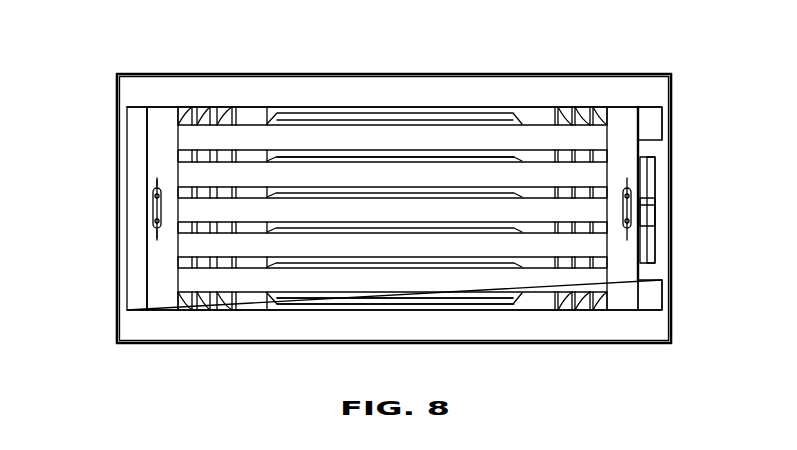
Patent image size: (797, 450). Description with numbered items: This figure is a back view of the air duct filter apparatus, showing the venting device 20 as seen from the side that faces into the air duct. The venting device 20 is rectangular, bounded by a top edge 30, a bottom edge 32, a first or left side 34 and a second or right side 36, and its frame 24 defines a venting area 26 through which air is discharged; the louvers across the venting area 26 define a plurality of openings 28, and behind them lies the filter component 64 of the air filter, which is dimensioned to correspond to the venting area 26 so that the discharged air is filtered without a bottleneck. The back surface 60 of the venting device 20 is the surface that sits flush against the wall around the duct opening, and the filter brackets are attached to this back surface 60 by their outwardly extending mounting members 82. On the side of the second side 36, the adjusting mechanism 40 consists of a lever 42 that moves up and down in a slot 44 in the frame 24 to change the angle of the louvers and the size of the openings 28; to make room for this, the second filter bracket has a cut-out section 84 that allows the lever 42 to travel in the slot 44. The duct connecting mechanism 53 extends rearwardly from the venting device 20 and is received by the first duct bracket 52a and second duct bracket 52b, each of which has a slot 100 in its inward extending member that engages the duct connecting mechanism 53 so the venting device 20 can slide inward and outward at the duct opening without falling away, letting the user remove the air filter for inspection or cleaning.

The venting device 20 is at (198, 85).
The frame 24 is at (437, 92).
The venting area 26 is at (322, 132).
The opening 28 is at (493, 283).
The top edge 30 is at (92, 338).
The bottom edge 32 is at (98, 72).
The first side 34 is at (115, 365).
The second side 36 is at (672, 365).
The adjusting mechanism 40 is at (675, 205).
The lever 42 is at (648, 218).
The slot 44 is at (653, 163).
The first duct bracket 52a is at (155, 145).
The second duct bracket 52b is at (627, 131).
The duct connecting mechanism 53 is at (143, 237).
The back surface 60 is at (557, 91).
The filter component 64 is at (312, 290).
The mounting member 82 is at (137, 123).
The cut-out section 84 is at (670, 272).
The slot 100 is at (154, 208).